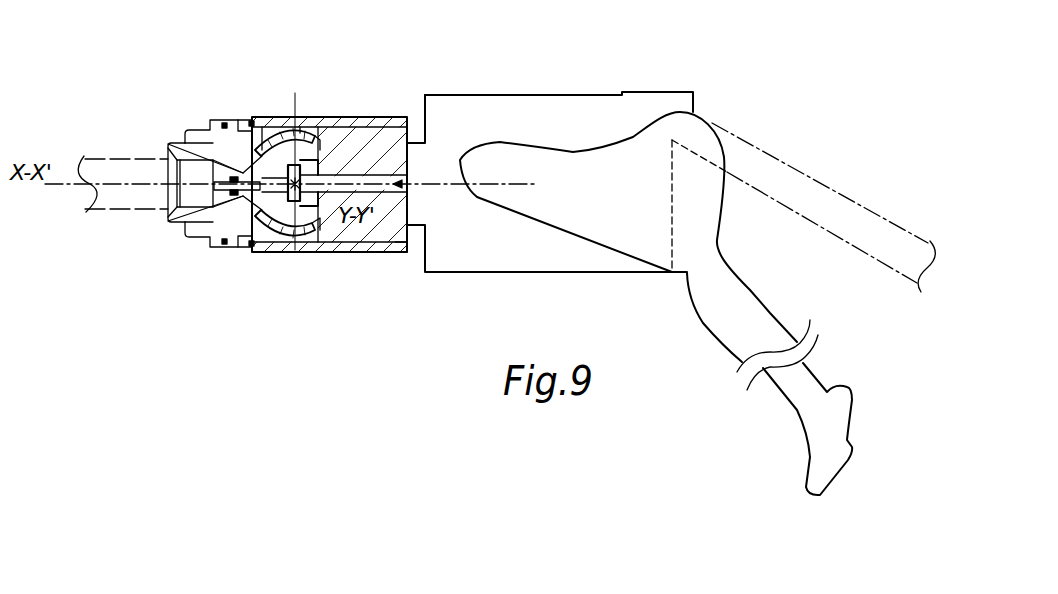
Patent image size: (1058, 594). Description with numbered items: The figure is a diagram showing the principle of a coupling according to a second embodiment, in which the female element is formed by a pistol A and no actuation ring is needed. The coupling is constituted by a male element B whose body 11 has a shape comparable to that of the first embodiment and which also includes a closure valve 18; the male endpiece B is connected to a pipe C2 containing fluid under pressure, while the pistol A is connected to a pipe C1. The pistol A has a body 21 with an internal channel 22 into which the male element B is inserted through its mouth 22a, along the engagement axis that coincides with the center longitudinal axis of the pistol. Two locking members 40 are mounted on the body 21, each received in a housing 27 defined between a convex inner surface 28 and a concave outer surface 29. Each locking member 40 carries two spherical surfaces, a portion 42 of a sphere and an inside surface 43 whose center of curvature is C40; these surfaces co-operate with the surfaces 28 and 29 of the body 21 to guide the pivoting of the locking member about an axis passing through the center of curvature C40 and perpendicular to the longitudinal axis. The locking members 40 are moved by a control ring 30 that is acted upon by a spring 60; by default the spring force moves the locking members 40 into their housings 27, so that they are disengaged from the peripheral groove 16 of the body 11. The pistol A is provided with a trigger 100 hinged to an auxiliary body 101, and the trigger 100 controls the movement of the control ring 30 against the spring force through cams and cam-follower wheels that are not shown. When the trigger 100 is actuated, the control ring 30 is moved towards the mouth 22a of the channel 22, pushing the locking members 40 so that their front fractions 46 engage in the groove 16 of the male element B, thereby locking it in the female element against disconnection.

The body 11 is at (200, 242).
The peripheral groove 16 is at (256, 250).
The closure valve 18 is at (232, 250).
The body 21 is at (395, 145).
The internal channel 22 is at (407, 187).
The mouth 22a is at (165, 227).
The housing 27 is at (315, 118).
The convex inner surface 28 is at (270, 118).
The concave outer surface 29 is at (297, 248).
The control ring 30 is at (392, 252).
The locking member 40 is at (293, 250).
The portion of a sphere 42 is at (330, 252).
The inside surface 43 is at (333, 118).
The front fraction 46 is at (250, 118).
The spring 60 is at (227, 117).
The trigger 100 is at (750, 317).
The auxiliary body 101 is at (567, 182).
The pistol A is at (380, 105).
The male element B is at (164, 134).
The pipe C1 is at (838, 213).
The pipe C2 is at (99, 170).
The center of curvature C40 is at (303, 186).